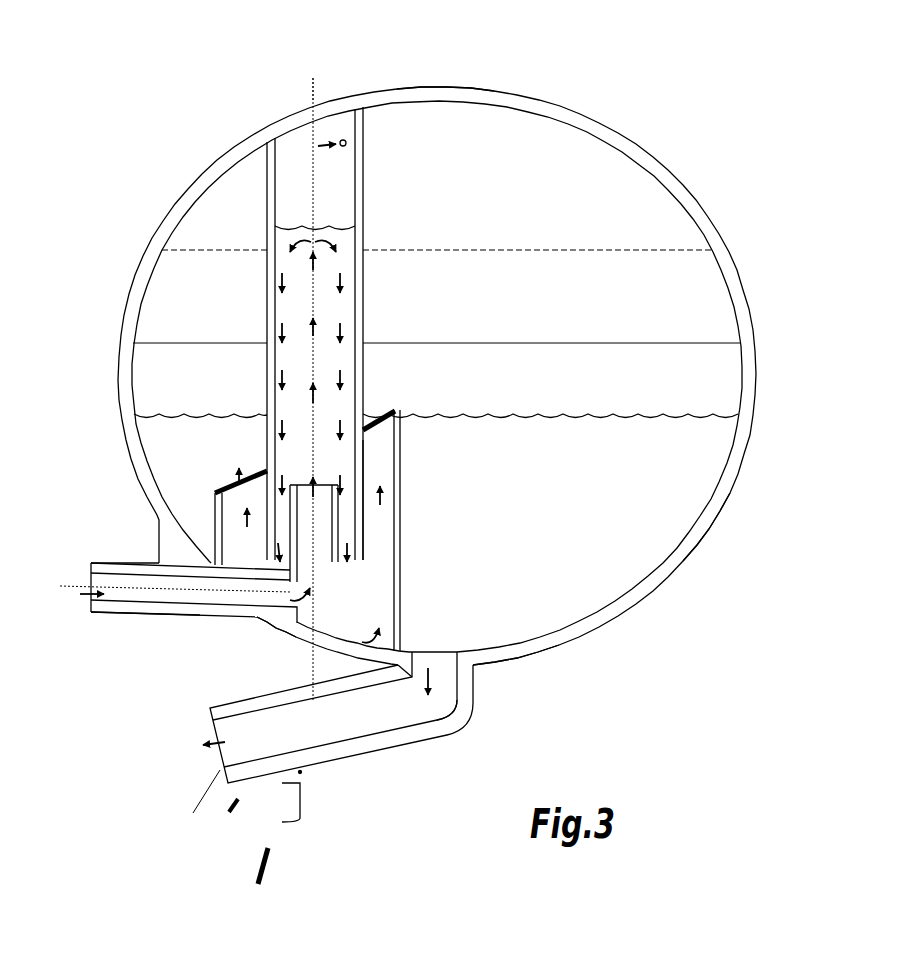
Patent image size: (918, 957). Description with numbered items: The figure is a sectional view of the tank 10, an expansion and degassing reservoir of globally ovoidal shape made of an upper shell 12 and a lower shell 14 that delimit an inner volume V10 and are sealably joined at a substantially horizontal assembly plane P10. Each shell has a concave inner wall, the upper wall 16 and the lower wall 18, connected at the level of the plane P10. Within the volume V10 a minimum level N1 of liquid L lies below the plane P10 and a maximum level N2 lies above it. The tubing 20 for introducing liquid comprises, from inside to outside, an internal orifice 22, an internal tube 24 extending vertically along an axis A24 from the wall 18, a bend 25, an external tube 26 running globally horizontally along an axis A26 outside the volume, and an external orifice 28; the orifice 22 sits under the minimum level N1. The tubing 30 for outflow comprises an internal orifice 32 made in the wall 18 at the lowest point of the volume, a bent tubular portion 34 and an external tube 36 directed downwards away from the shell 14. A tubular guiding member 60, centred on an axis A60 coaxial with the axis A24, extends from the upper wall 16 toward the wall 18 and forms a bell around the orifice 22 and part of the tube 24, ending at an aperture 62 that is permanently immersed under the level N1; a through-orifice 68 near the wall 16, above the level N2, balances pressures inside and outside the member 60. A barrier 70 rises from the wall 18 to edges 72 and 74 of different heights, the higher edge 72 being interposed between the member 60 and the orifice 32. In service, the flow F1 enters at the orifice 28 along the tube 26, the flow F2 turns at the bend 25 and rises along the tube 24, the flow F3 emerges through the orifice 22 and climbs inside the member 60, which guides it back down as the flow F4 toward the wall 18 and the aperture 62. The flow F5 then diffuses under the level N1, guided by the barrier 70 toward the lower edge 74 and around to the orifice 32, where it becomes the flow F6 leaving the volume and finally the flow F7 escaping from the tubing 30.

The tank 10 is at (133, 112).
The upper shell 12 is at (641, 140).
The lower shell 14 is at (655, 600).
The upper inner wall 16 is at (449, 103).
The lower inner wall 18 is at (523, 643).
The tubing for introducing liquid 20 is at (113, 630).
The internal orifice 22 is at (362, 458).
The internal tube 24 is at (365, 516).
The bend 25 is at (303, 643).
The external tube 26 is at (178, 620).
The external orifice 28 is at (87, 569).
The tubing for outflow of liquid 30 is at (247, 844).
The internal orifice 32 is at (446, 651).
The bent tubular portion 34 is at (476, 686).
The external tube 36 is at (397, 745).
The guiding member 60 is at (262, 305).
The aperture 62 is at (262, 616).
The through-orifice 68 is at (308, 152).
The barrier 70 is at (404, 562).
The edge 72 is at (399, 408).
The edge 74 is at (212, 480).
The axis of the internal tube A24 is at (318, 51).
The axis of the guiding member A60 is at (318, 59).
The axis of the external tube A26 is at (158, 584).
The assembly plane P10 is at (757, 343).
The minimum level N1 is at (596, 399).
The maximum level N2 is at (578, 253).
The inner volume V10 is at (478, 297).
The liquid L is at (600, 492).
The flow F1 is at (83, 606).
The flow F2 is at (334, 614).
The flow F3 is at (314, 474).
The flow F4 is at (308, 565).
The flow F5 is at (312, 488).
The flow F6 is at (443, 681).
The flow F7 is at (200, 741).